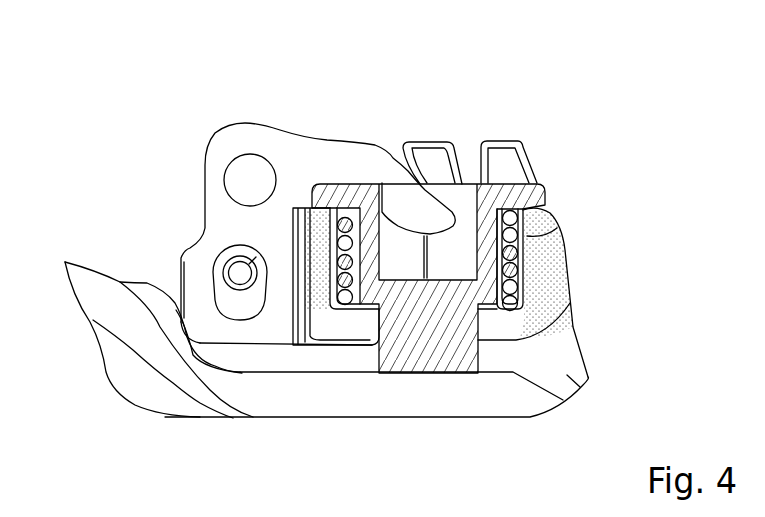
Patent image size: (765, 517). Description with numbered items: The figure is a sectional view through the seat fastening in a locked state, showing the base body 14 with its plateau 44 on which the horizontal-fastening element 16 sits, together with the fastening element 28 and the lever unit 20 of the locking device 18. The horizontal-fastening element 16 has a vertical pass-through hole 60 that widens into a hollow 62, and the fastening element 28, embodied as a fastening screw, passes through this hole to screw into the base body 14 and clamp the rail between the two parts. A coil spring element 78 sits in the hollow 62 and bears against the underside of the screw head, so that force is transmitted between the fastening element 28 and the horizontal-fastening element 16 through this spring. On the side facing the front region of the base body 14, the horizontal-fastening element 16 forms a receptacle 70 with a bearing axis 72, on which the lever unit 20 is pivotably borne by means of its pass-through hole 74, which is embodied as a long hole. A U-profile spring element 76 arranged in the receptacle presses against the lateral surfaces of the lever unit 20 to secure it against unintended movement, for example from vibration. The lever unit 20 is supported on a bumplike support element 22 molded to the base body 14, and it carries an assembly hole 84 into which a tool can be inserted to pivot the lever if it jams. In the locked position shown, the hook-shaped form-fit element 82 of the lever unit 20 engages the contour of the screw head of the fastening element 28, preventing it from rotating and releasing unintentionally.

The base body 14 is at (138, 383).
The horizontal-fastening element 16 is at (587, 383).
The locking device 18 is at (197, 122).
The lever unit 20 is at (302, 148).
The support element 22 is at (150, 292).
The fastening element 28 is at (513, 163).
The plateau 44 is at (323, 366).
The pass-through hole 60 is at (537, 327).
The hollow 62 is at (557, 228).
The receptacle 70 is at (180, 208).
The bearing axis 72 is at (227, 264).
The pass-through hole 74 is at (238, 323).
The spring element 76 is at (186, 250).
The spring element 78 is at (527, 257).
The form-fit element 82 is at (410, 219).
The assembly hole 84 is at (243, 153).